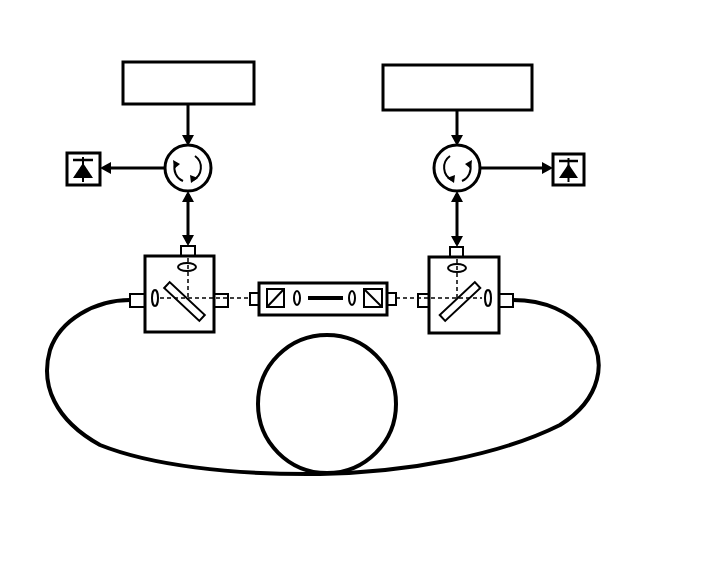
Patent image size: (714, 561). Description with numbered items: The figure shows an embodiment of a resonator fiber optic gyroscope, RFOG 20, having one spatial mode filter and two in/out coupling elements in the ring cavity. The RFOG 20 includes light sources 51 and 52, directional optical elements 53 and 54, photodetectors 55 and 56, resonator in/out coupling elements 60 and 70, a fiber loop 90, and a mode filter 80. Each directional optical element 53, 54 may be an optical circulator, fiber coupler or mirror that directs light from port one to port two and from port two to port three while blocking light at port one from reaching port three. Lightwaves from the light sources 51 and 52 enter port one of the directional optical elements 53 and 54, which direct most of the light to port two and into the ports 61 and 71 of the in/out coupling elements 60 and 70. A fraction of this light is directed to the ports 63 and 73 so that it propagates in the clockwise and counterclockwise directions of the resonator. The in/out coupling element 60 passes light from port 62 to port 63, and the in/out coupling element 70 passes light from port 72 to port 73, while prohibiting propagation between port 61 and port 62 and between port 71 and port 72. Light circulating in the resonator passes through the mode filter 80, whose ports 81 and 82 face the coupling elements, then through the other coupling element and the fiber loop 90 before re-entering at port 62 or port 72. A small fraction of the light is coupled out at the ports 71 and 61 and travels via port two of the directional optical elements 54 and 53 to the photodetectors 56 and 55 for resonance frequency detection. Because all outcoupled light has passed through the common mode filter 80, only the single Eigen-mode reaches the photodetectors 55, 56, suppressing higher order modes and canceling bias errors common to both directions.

The RFOG 20 is at (601, 84).
The light source 51 is at (212, 62).
The light source 52 is at (459, 65).
The directional optical element 53 is at (212, 163).
The directional optical element 54 is at (434, 163).
The photodetector 55 is at (67, 170).
The photodetector 56 is at (585, 167).
The resonator in/out coupling element 60 is at (145, 268).
The port 61 is at (196, 250).
The port 62 is at (135, 307).
The port 63 is at (220, 307).
The resonator in/out coupling element 70 is at (500, 268).
The port 71 is at (450, 250).
The port 72 is at (508, 308).
The port 73 is at (418, 308).
The mode filter 80 is at (325, 283).
The port 81 is at (255, 289).
The port 82 is at (393, 289).
The fiber loop 90 is at (345, 340).